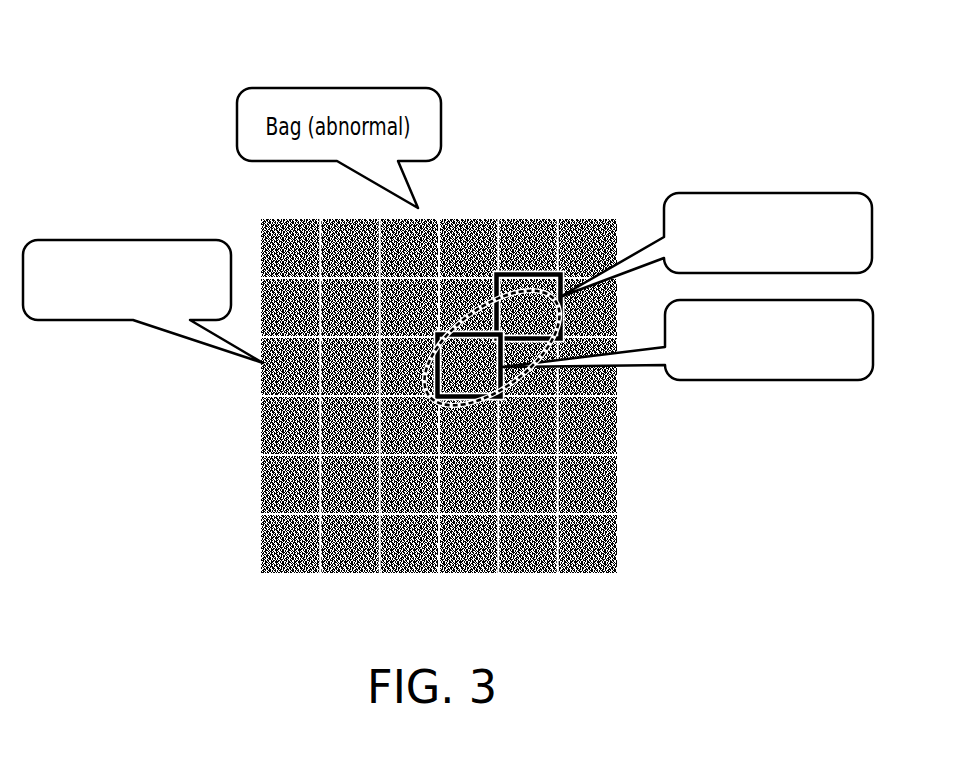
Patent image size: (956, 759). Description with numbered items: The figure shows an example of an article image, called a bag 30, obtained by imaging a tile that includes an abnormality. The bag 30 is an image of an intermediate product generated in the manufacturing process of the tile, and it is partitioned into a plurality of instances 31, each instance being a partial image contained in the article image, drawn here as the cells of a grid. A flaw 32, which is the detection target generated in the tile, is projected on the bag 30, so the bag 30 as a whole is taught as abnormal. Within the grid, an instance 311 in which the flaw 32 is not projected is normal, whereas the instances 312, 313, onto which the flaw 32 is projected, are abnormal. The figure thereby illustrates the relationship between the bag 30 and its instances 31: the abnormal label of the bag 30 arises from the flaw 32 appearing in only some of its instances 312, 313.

The article image (bag) 30 is at (557, 193).
The instance 31 is at (293, 570).
The flaw 32 is at (458, 357).
The instance 311 is at (143, 301).
The instance 312 is at (685, 266).
The instance 313 is at (656, 348).